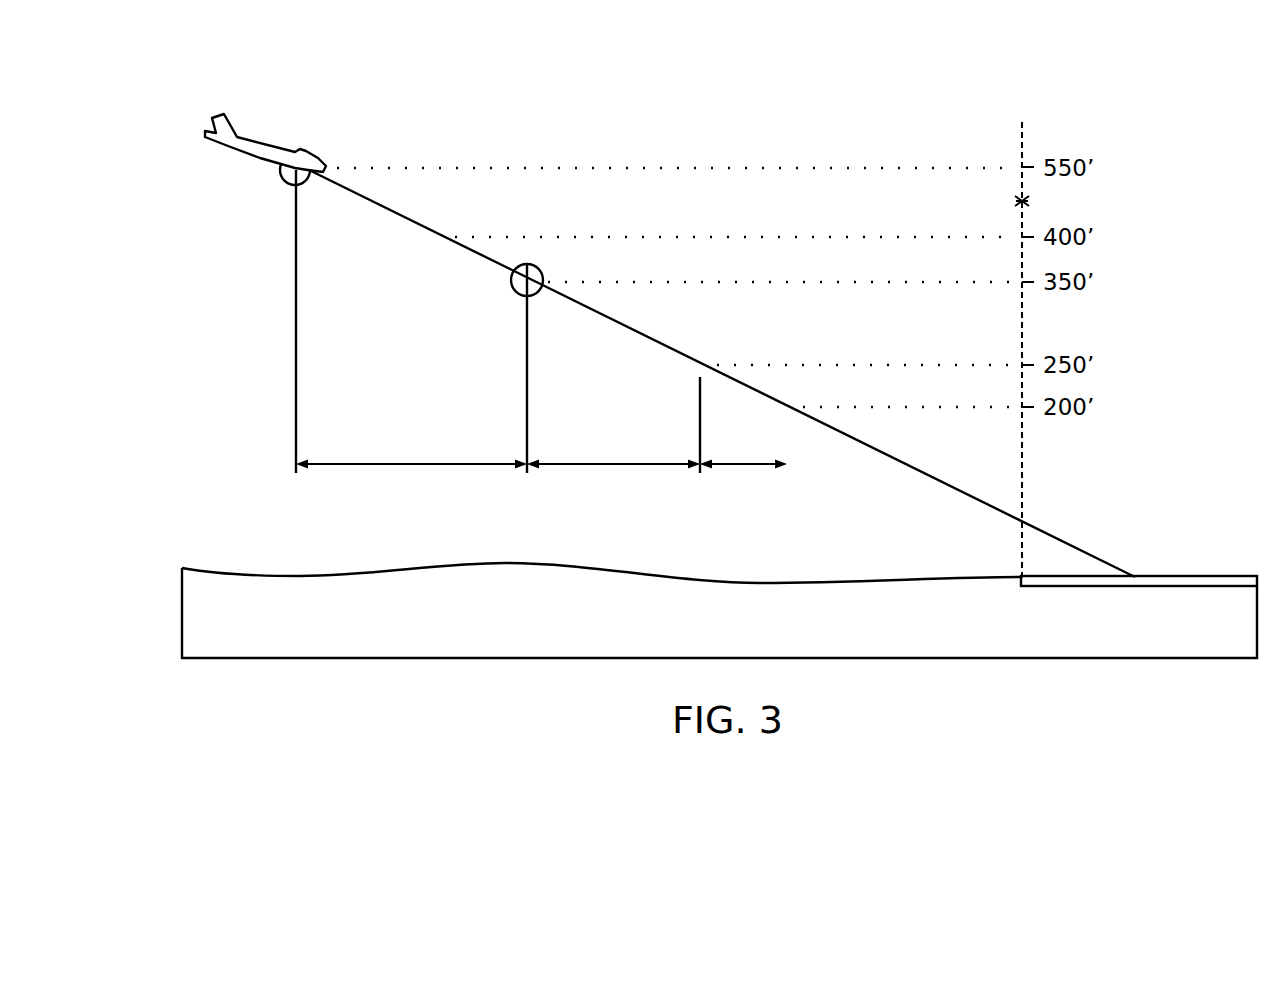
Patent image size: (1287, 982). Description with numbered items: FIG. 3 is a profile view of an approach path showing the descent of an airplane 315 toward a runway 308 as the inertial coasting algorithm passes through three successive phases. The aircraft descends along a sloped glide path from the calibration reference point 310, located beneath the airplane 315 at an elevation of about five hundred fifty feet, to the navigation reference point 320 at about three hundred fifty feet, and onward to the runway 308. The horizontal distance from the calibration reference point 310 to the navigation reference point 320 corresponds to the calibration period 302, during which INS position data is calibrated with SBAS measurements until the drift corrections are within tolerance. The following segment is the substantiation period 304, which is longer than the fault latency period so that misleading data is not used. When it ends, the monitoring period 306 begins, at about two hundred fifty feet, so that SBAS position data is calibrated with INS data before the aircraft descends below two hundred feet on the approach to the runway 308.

The calibration period 302 is at (412, 466).
The substantiation period 304 is at (613, 466).
The monitoring period 306 is at (745, 466).
The runway 308 is at (1223, 576).
The calibration reference point 310 is at (283, 183).
The airplane 315 is at (224, 114).
The navigation reference point 320 is at (516, 292).